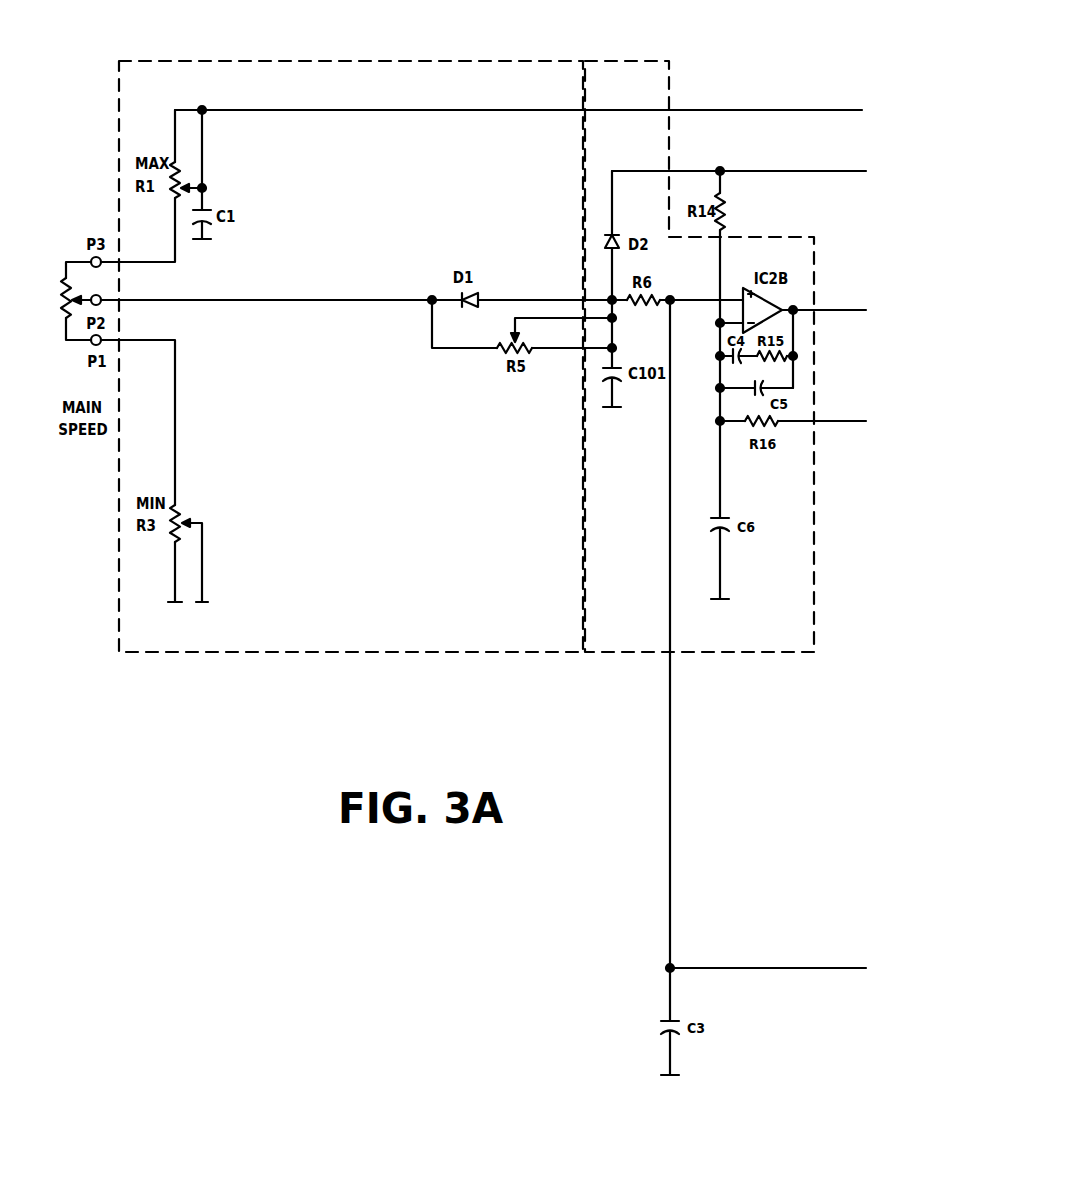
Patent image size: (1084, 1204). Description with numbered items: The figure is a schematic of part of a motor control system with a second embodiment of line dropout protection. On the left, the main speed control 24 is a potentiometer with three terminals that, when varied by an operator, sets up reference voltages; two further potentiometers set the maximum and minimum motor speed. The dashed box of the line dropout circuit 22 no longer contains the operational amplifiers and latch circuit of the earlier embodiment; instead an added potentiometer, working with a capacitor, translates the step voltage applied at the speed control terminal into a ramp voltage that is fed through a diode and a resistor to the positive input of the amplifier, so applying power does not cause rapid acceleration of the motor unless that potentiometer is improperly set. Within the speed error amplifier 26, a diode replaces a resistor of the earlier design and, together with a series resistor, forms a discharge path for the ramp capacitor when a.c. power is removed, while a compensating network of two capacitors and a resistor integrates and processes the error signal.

The line dropout circuit 22 is at (424, 58).
The main speed control 24 is at (63, 280).
The speed error amplifier 26 is at (627, 58).